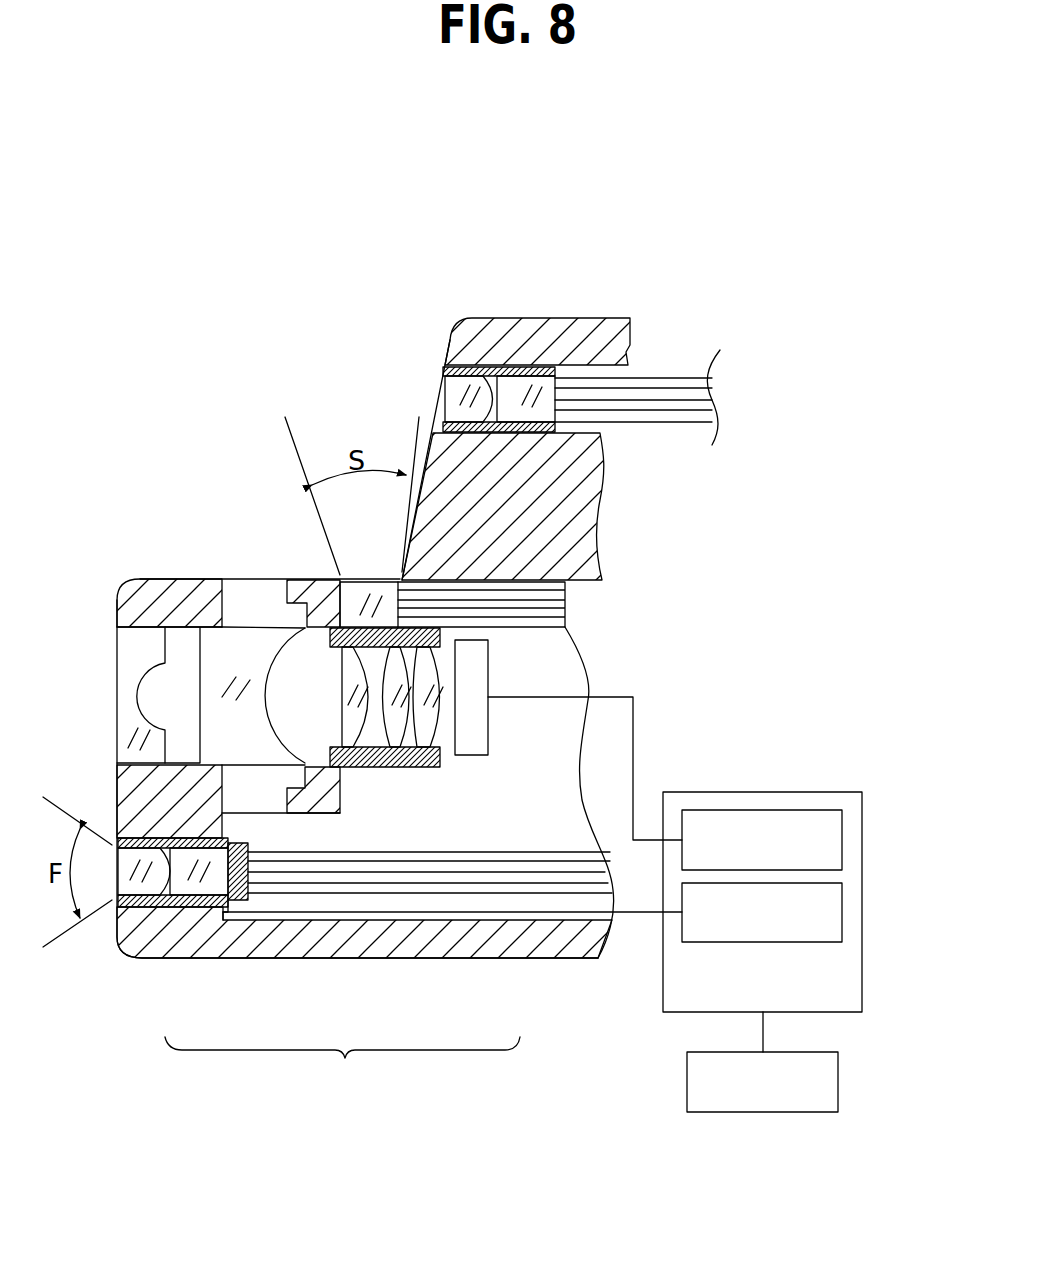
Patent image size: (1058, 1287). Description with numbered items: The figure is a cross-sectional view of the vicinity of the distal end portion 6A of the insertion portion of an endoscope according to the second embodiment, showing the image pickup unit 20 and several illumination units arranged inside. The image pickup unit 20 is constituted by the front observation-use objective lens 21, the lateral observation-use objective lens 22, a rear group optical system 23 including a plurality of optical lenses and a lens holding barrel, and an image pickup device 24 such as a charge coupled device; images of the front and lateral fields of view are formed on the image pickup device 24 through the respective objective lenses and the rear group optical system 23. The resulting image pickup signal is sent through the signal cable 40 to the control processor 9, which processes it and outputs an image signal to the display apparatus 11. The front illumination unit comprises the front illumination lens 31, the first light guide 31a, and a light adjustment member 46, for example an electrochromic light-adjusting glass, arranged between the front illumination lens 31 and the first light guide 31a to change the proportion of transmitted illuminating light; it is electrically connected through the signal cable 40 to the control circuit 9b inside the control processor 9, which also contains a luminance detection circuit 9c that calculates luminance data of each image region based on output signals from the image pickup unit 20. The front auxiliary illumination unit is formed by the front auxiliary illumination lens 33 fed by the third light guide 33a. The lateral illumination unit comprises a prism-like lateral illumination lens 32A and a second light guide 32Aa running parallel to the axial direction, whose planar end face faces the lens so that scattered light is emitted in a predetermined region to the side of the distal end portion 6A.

The distal end portion 6A is at (518, 1080).
The front auxiliary illumination lens 33 is at (528, 367).
The third light guide 33a is at (673, 387).
The lateral illumination lens 32A is at (377, 590).
The second light guide 32Aa is at (535, 620).
The front observation-use objective lens 21 is at (153, 760).
The lateral observation-use objective lens 22 is at (257, 760).
The rear group optical system 23 is at (342, 767).
The image pickup device 24 is at (465, 745).
The front illumination lens 31 is at (140, 908).
The first light guide 31a is at (537, 862).
The light adjustment member 46 is at (230, 913).
The signal cable 40 is at (627, 914).
The image pickup unit 20 is at (342, 1062).
The control processor 9 is at (790, 894).
The luminance detection circuit 9c is at (843, 837).
The control circuit 9b is at (843, 910).
The display apparatus 11 is at (838, 1082).